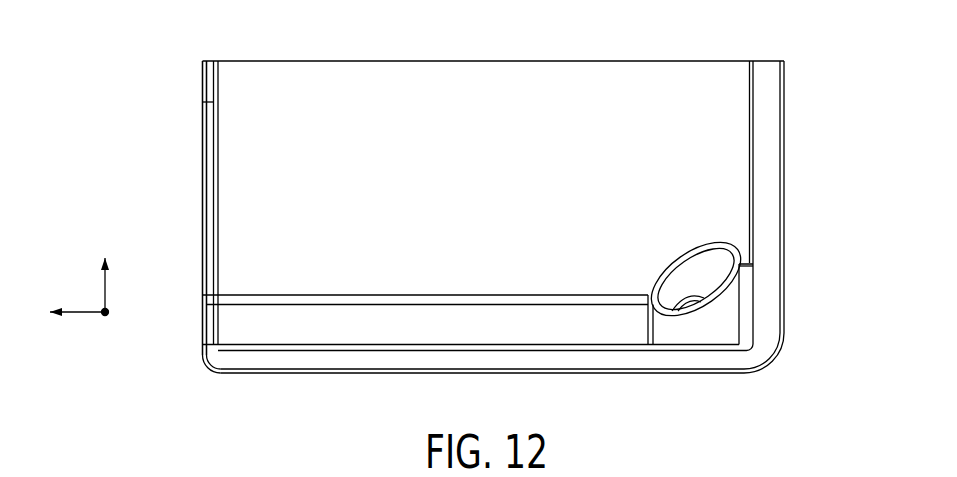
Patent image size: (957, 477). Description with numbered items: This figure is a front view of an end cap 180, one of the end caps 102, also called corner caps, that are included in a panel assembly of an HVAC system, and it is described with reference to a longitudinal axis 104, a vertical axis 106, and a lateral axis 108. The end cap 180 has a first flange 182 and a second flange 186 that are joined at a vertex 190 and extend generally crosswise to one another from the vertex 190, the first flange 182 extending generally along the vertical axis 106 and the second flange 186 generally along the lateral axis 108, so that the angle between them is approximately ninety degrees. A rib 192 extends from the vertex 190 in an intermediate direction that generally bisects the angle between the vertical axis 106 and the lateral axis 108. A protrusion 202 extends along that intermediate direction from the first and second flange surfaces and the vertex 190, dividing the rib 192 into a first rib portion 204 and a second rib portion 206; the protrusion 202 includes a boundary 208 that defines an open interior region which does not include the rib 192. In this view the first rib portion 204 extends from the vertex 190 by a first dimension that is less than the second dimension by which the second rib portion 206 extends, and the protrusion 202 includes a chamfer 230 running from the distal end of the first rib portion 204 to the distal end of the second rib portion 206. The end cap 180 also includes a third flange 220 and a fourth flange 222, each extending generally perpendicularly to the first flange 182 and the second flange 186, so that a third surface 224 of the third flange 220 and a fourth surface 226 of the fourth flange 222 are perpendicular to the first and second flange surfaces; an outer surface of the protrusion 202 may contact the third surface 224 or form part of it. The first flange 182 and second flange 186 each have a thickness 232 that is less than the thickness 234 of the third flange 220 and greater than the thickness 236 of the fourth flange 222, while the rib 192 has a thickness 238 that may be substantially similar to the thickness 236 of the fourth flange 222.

The end caps 102 is at (277, 42).
The end cap 180 is at (205, 208).
The first flange 182 is at (373, 60).
The second flange 186 is at (413, 371).
The vertex 190 is at (228, 352).
The rib 192 is at (389, 293).
The longitudinal axis 104 is at (86, 312).
The vertical axis 106 is at (109, 290).
The lateral axis 108 is at (108, 316).
The protrusion 202 is at (723, 313).
The first rib portion 204 is at (314, 294).
The second rib portion 206 is at (744, 298).
The boundary 208 is at (704, 334).
The third flange 220 is at (768, 157).
The fourth flange 222 is at (212, 229).
The third surface 224 is at (737, 137).
The fourth surface 226 is at (226, 112).
The chamfer 230 is at (660, 261).
The thickness 232 is at (580, 295).
The thickness 234 is at (705, 82).
The thickness 236 is at (277, 149).
The thickness 238 is at (464, 362).